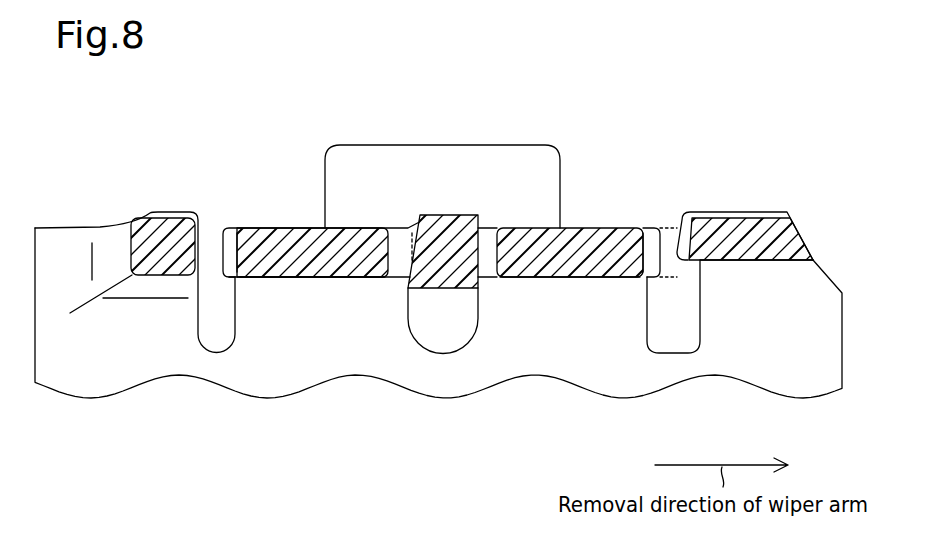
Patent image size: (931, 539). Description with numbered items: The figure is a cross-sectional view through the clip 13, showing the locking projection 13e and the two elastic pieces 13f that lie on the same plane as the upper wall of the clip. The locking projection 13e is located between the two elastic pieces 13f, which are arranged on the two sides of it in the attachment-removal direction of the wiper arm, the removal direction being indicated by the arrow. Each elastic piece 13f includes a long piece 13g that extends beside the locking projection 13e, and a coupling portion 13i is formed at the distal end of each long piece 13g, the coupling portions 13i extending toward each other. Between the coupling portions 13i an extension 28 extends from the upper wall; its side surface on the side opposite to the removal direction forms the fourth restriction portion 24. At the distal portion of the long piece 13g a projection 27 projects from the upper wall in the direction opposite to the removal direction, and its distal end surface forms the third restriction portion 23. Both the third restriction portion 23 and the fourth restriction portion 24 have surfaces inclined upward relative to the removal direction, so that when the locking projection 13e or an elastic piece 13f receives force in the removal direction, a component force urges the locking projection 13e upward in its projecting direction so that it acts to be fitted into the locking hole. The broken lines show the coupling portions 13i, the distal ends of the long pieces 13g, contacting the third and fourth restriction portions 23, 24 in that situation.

The clip 13 is at (123, 223).
The locking projection 13e is at (448, 145).
The elastic piece 13f is at (465, 253).
The long piece 13g is at (243, 233).
The coupling portion 13i is at (322, 275).
The third restriction portion 23 is at (678, 222).
The fourth restriction portion 24 is at (414, 238).
The projection 27 is at (693, 253).
The extension 28 is at (443, 283).